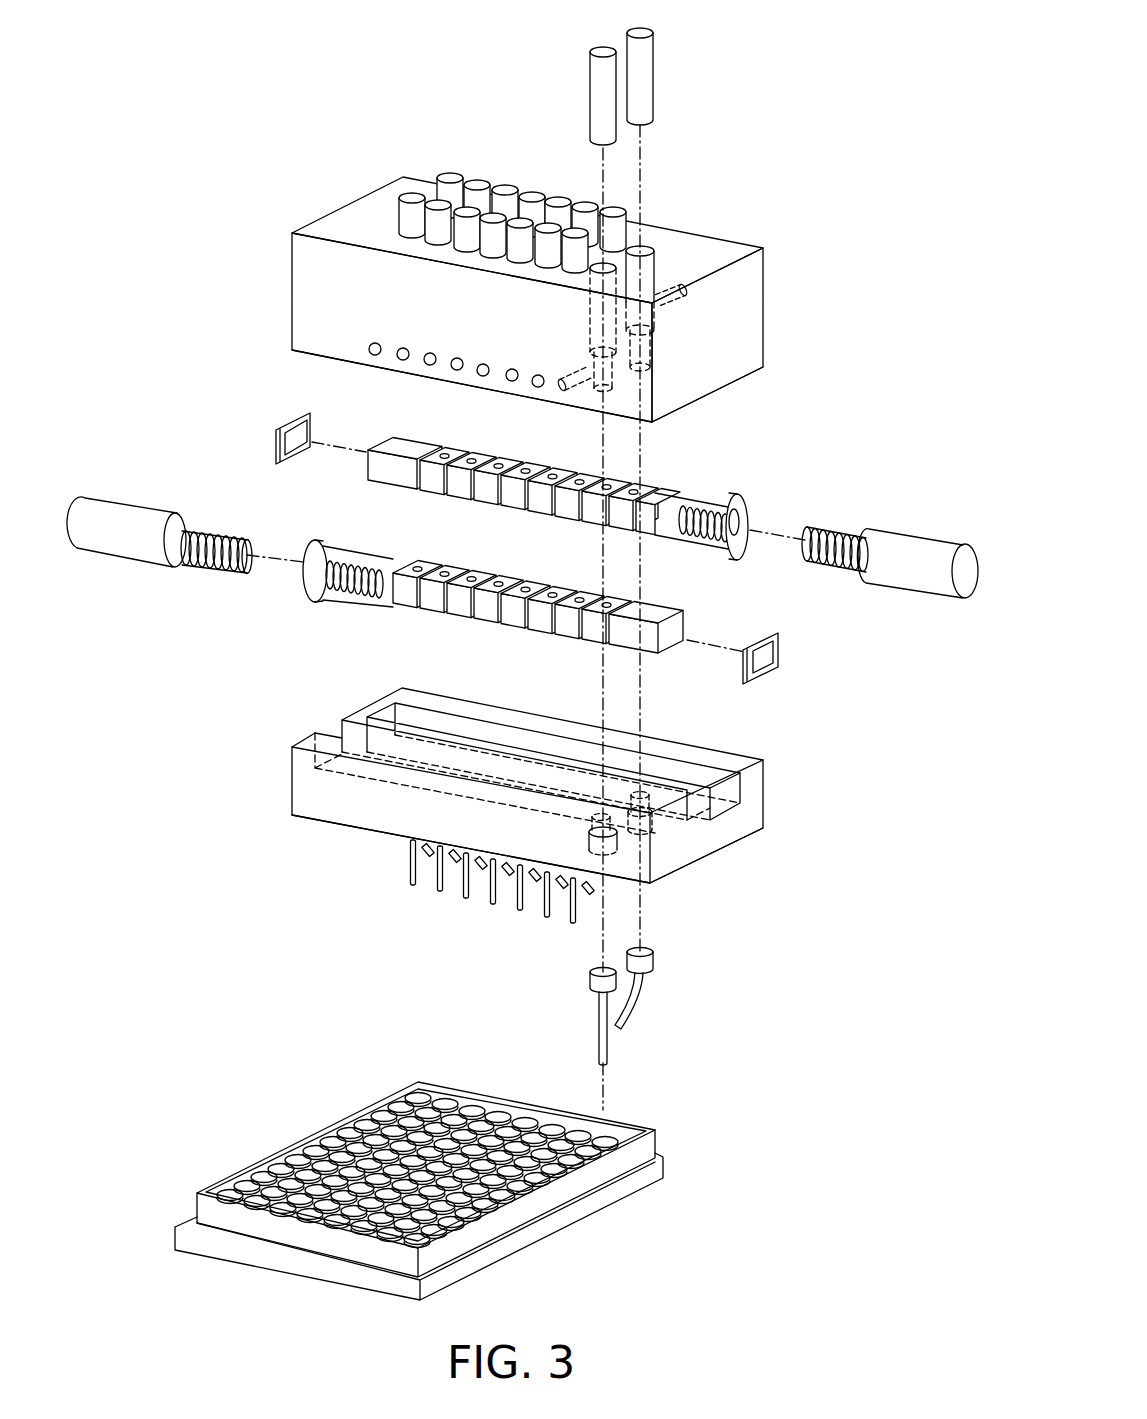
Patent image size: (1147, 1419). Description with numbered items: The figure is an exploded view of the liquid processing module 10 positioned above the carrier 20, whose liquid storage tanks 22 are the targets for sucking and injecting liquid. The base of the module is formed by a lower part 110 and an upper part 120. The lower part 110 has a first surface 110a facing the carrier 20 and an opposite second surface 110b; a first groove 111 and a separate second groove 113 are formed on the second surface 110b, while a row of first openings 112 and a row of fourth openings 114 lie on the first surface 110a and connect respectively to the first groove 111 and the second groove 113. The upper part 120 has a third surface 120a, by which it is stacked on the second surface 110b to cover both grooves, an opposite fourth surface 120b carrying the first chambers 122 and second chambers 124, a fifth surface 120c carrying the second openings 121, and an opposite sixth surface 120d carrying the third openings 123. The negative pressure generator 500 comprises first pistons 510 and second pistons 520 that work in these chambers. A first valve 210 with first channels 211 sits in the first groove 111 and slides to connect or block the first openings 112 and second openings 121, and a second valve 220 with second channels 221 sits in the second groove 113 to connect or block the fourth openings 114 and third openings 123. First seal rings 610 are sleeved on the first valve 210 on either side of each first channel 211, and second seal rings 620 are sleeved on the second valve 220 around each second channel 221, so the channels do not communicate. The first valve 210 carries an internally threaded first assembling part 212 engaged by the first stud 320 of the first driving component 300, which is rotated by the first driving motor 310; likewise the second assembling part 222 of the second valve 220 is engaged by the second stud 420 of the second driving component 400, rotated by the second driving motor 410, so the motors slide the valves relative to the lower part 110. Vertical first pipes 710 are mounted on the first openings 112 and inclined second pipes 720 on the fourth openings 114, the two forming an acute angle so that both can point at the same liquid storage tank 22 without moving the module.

The liquid processing module 10 is at (522, 653).
The carrier 20 is at (452, 1191).
The liquid storage tank 22 is at (642, 1146).
The lower part 110 is at (572, 788).
The first surface 110a is at (753, 846).
The second surface 110b is at (761, 752).
The first groove 111 is at (331, 727).
The first opening 112 is at (608, 858).
The second groove 113 is at (726, 784).
The fourth opening 114 is at (654, 843).
The upper part 120 is at (550, 263).
The third surface 120a is at (752, 382).
The fourth surface 120b is at (703, 251).
The fifth surface 120c is at (336, 298).
The sixth surface 120d is at (768, 272).
The second opening 121 is at (562, 388).
The first chamber 122 is at (592, 274).
The third opening 123 is at (692, 297).
The second chamber 124 is at (647, 250).
The first valve 210 is at (466, 579).
The first channel 211 is at (547, 587).
The first assembling part 212 is at (312, 562).
The second valve 220 is at (608, 484).
The second channel 221 is at (650, 480).
The second assembling part 222 is at (744, 522).
The first driving component 300 is at (159, 586).
The first driving motor 310 is at (117, 545).
The first stud 320 is at (207, 558).
The second driving component 400 is at (890, 611).
The second driving motor 410 is at (917, 592).
The second stud 420 is at (833, 566).
The negative pressure generator 500 is at (530, 186).
The first piston 510 is at (603, 52).
The second piston 520 is at (652, 70).
The first seal ring 610 is at (768, 645).
The second seal ring 620 is at (288, 420).
The first pipe 710 is at (607, 1046).
The second pipe 720 is at (640, 1000).